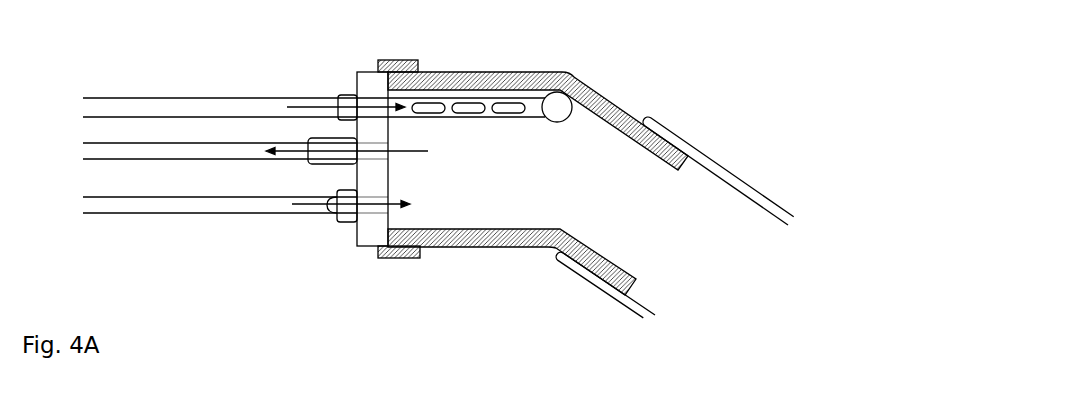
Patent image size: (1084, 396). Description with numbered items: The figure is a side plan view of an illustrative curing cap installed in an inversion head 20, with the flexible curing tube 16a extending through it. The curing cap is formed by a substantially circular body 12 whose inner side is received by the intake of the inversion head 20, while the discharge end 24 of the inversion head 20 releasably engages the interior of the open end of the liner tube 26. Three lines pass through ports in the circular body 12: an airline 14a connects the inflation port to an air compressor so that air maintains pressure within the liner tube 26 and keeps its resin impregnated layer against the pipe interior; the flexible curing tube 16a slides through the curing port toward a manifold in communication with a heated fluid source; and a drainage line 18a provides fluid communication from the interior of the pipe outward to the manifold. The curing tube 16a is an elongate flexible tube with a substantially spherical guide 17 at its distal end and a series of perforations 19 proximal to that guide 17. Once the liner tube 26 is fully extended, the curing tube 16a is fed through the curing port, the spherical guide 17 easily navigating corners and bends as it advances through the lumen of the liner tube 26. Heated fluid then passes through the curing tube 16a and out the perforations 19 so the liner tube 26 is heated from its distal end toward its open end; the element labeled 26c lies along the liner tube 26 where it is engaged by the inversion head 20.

The circular body 12 is at (368, 247).
The airline 14a is at (182, 213).
The flexible curing tube 16a is at (176, 98).
The spherical guide 17 is at (557, 123).
The drainage line 18a is at (87, 160).
The perforations 19 is at (508, 103).
The inversion head 20 is at (447, 268).
The discharge end 24 is at (657, 148).
The liner tube 26 is at (715, 158).
The strip contact surface 26c is at (714, 166).